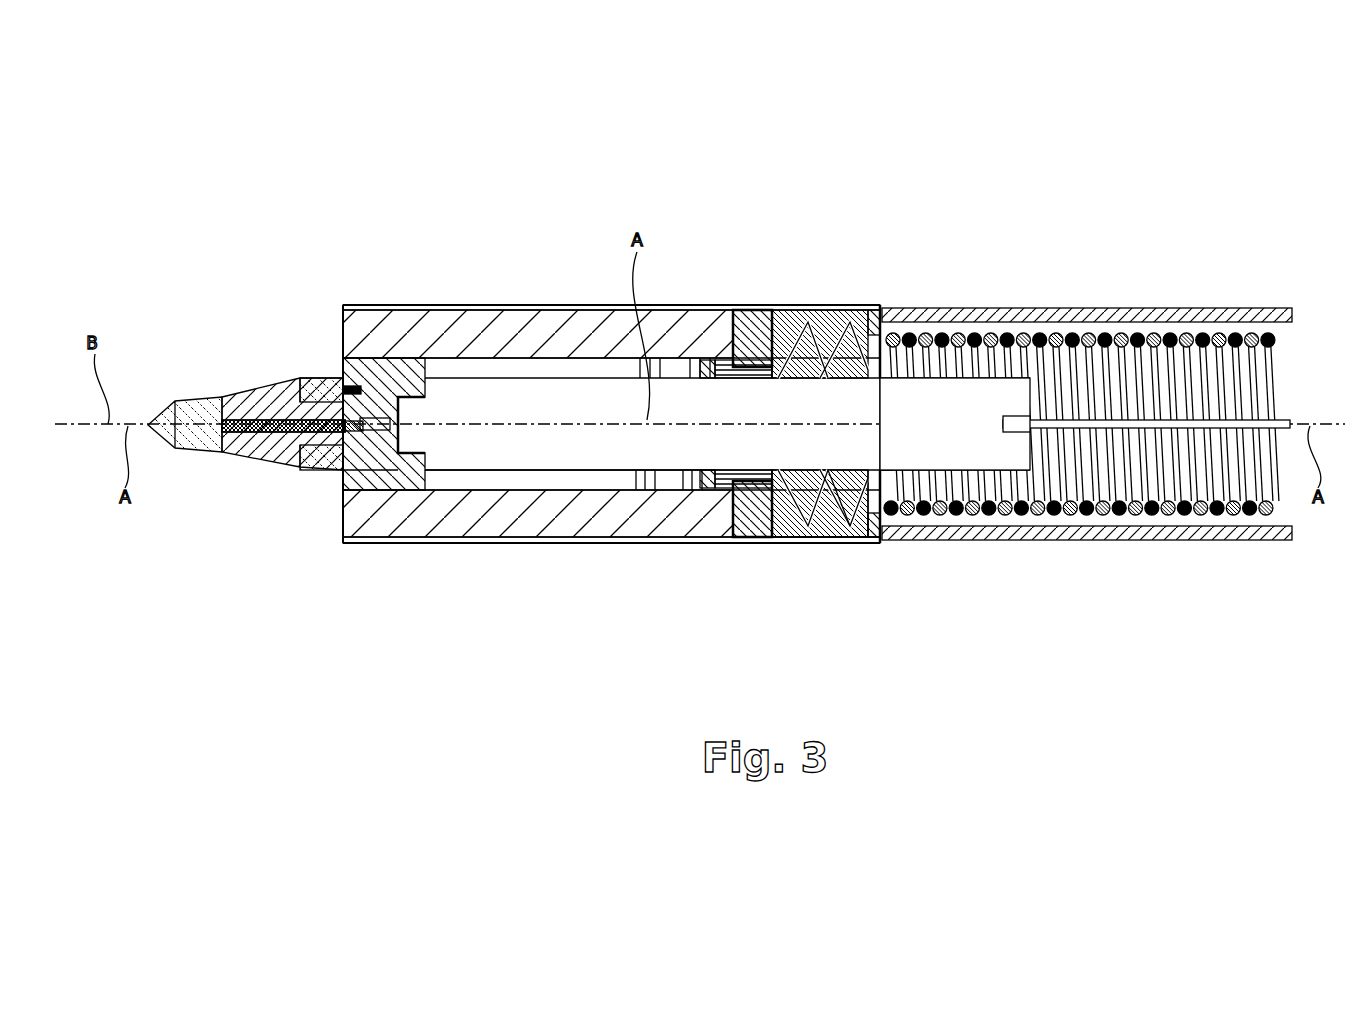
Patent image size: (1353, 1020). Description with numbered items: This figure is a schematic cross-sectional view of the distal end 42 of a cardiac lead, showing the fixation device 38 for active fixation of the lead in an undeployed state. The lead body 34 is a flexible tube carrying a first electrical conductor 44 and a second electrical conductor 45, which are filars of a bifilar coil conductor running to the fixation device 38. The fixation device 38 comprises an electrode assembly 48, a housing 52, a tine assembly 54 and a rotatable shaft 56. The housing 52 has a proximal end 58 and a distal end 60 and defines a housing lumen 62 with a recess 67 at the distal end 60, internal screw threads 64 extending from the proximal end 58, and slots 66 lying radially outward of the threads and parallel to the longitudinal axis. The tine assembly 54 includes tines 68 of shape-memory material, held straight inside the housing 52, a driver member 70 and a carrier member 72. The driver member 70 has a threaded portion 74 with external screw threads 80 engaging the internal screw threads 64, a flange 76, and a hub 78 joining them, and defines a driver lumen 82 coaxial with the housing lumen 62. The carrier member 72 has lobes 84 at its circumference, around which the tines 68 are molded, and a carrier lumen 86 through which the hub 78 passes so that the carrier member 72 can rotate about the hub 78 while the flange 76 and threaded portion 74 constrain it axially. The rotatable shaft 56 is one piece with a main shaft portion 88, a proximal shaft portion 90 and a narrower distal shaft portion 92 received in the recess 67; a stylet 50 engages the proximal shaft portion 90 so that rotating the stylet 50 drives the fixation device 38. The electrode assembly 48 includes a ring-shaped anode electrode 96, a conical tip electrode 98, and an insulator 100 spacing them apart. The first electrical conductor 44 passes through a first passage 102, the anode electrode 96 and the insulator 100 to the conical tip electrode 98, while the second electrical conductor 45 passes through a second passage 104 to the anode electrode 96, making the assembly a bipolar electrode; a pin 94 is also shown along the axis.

The lead body 34 is at (1112, 541).
The fixation device 38 is at (562, 300).
The distal end 42 is at (498, 148).
The first electrical conductor 44 is at (250, 400).
The second electrical conductor 45 is at (340, 390).
The electrode assembly 48 is at (192, 391).
The stylet 50 is at (1200, 514).
The housing 52 is at (812, 545).
The tine assembly 54 is at (757, 330).
The rotatable shaft 56 is at (508, 459).
The proximal end 58 is at (868, 495).
The distal end 60 is at (352, 543).
The housing lumen 62 is at (615, 486).
The internal screw threads 64 is at (707, 358).
The slot 66 is at (345, 308).
The recess 67 is at (428, 400).
The tine 68 is at (490, 330).
The driver member 70 is at (889, 341).
The carrier member 72 is at (745, 545).
The threaded portion 74 is at (845, 520).
The flange 76 is at (690, 495).
The hub 78 is at (745, 306).
The external screw threads 80 is at (838, 345).
The driver lumen 82 is at (895, 480).
The lobe 84 is at (780, 370).
The carrier lumen 86 is at (722, 482).
The main shaft portion 88 is at (548, 470).
The proximal shaft portion 90 is at (988, 390).
The distal shaft portion 92 is at (355, 470).
The pin 94 is at (1031, 418).
The anode electrode 96 is at (300, 385).
The conical tip electrode 98 is at (170, 410).
The insulator 100 is at (285, 453).
The first passage 102 is at (387, 415).
The second passage 104 is at (356, 386).